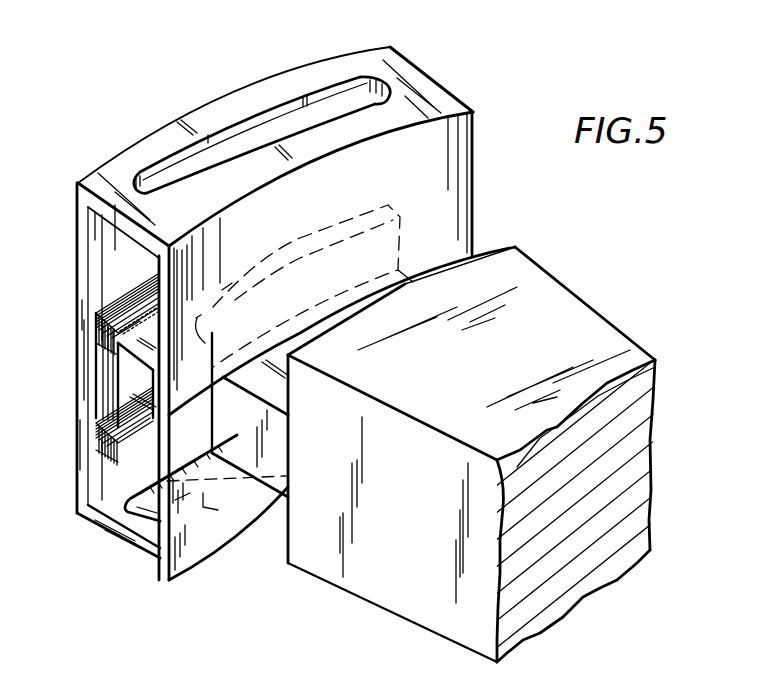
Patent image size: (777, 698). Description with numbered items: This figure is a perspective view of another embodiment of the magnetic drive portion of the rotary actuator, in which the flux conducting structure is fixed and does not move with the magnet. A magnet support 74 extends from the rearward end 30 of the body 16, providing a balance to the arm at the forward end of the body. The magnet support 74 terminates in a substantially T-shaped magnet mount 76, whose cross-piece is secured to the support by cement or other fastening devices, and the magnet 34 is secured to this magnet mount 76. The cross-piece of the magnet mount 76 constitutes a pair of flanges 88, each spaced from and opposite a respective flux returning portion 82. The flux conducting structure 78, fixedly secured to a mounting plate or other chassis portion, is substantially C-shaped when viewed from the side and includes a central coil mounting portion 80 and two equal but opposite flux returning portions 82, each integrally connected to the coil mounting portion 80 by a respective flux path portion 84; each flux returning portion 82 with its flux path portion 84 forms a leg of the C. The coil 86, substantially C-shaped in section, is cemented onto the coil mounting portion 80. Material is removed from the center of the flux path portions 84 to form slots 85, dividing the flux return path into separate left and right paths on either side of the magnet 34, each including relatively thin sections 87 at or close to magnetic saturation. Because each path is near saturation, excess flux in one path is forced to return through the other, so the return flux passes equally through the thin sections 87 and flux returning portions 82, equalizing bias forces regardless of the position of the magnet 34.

The body 16 is at (496, 365).
The rearward end 30 is at (287, 555).
The magnet 34 is at (125, 395).
The magnet support 74 is at (275, 477).
The magnet mount 76 is at (227, 300).
The flux conducting structure 78 is at (192, 112).
The coil mounting portion 80 is at (77, 295).
The flux returning portion 82 is at (180, 490).
The flux path portion 84 is at (130, 229).
The slot 85 is at (305, 100).
The coil 86 is at (128, 295).
The thin section 87 is at (122, 192).
The flange 88 is at (293, 283).